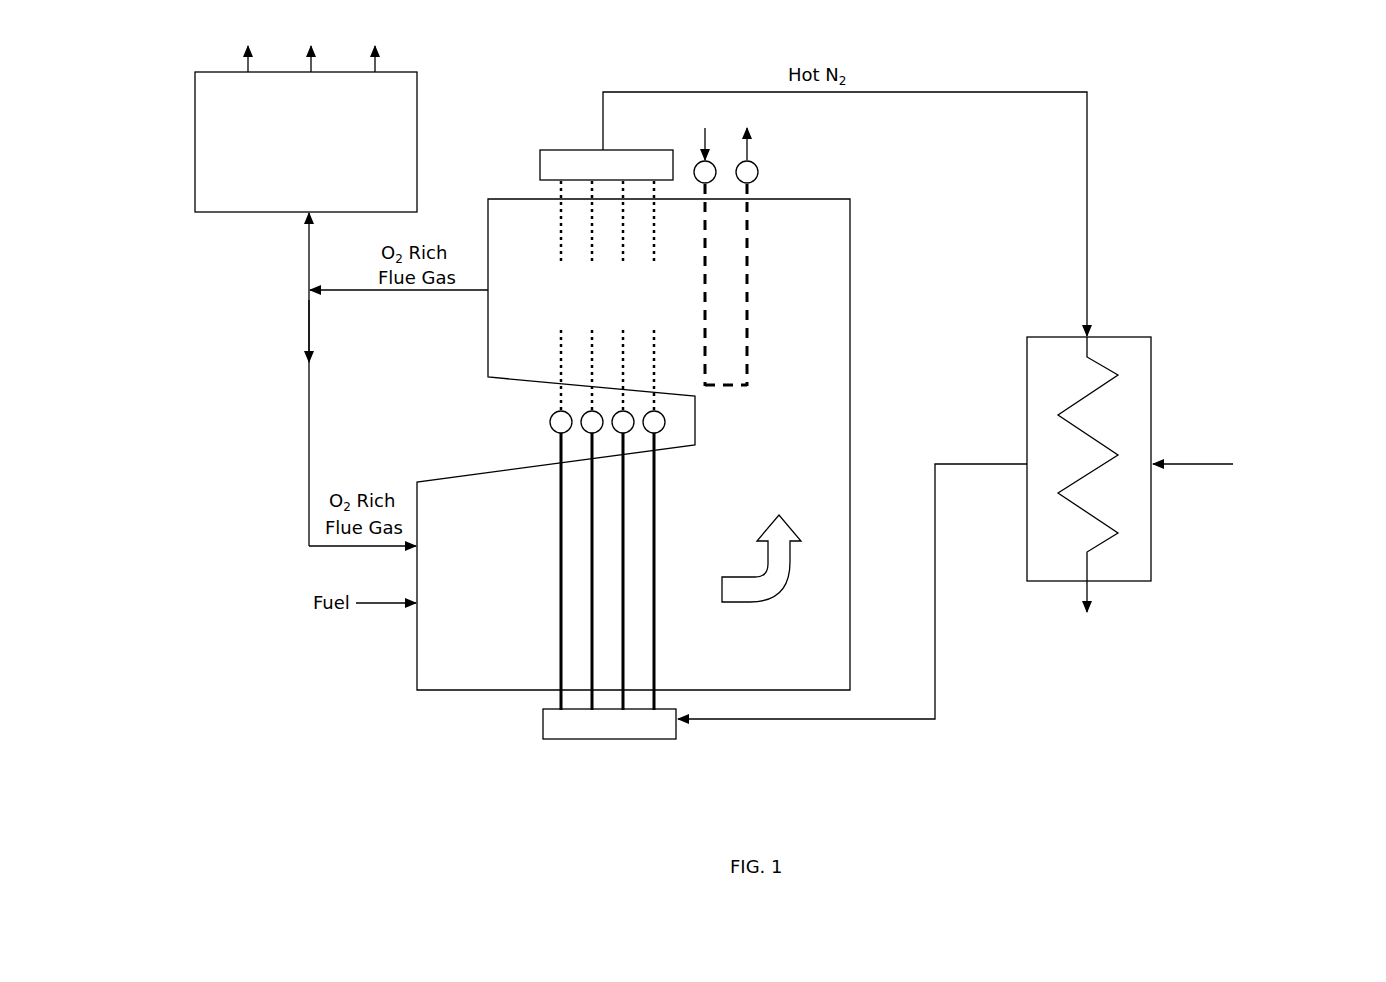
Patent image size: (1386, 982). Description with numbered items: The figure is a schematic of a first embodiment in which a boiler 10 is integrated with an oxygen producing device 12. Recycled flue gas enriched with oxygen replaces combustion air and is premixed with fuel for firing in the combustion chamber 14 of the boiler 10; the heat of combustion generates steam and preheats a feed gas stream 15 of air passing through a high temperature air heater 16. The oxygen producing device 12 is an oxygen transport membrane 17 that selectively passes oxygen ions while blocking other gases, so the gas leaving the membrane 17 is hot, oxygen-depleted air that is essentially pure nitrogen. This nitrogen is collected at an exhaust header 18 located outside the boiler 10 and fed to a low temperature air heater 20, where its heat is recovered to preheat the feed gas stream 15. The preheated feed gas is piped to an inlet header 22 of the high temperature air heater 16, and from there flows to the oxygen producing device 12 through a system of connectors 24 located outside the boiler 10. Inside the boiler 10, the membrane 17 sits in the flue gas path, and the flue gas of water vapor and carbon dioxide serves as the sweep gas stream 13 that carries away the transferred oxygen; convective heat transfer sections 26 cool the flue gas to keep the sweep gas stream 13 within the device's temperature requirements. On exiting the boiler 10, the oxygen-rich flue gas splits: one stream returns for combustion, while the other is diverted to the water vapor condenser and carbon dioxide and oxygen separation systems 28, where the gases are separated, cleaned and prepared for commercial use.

The boiler 10 is at (855, 450).
The oxygen producing device 12 is at (545, 296).
The sweep gas stream 13 is at (790, 578).
The combustion chamber 14 is at (488, 586).
The feed gas stream 15 is at (720, 722).
The high temperature air heater 16 is at (670, 578).
The oxygen transport membrane 17 is at (560, 256).
The exhaust header 18 is at (540, 165).
The low temperature air heater 20 is at (1153, 337).
The inlet header 22 is at (608, 741).
The system of connectors 24 is at (550, 422).
The convective heat transfer sections 26 is at (742, 278).
The water vapor condenser and CO2 and O2 separation systems 28 is at (306, 116).